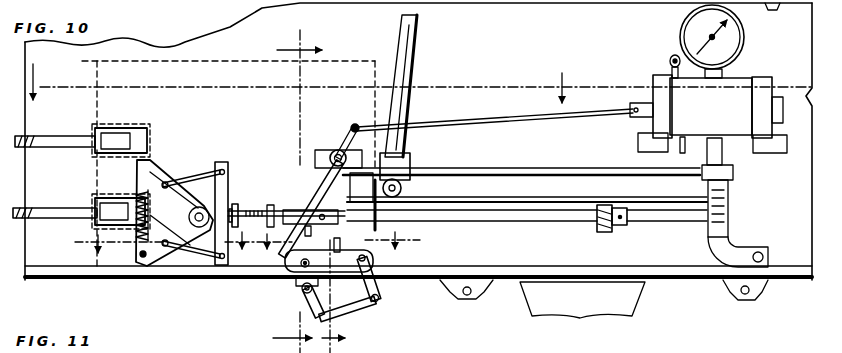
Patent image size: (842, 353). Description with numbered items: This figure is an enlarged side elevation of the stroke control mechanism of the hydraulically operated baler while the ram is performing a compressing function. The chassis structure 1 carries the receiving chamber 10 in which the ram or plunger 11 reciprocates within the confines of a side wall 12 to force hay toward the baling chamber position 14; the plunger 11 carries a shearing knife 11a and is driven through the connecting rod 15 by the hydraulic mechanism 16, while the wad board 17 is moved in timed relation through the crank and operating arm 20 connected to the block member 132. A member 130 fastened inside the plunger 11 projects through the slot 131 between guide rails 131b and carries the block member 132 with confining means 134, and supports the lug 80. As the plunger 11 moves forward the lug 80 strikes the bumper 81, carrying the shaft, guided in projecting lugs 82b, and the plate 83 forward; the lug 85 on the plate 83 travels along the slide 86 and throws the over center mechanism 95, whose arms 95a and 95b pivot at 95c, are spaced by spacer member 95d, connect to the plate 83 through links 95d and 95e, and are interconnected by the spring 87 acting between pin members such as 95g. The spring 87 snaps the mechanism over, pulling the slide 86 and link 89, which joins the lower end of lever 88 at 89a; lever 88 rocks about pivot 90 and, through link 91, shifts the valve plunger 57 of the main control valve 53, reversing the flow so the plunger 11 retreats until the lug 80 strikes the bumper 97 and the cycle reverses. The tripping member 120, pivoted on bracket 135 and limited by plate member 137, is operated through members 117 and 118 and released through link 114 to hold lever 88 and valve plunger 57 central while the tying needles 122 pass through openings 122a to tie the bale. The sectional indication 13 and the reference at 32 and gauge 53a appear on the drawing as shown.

The chassis structure 1 is at (55, 283).
The receiving chamber 10 is at (58, 133).
The ram or plunger 11 is at (184, 67).
The shearing knife 11a is at (95, 62).
The side wall 12 is at (58, 250).
The sectional view line 13 is at (422, 75).
The baling chamber position 14 is at (169, 242).
The connecting rod 15 is at (299, 97).
The hydraulic mechanism 16 is at (309, 296).
The wad board 17 is at (322, 236).
The crank and operating arm 20 is at (423, 37).
The base 32 is at (582, 281).
The main control valve 53 is at (729, 94).
The pressure gauge 53a is at (735, 45).
The valve plunger 57 is at (648, 102).
The lug 80 is at (424, 203).
The bumper 81 is at (338, 236).
The projecting lugs 82b is at (310, 183).
The plate 83 is at (223, 165).
The lug 85 is at (236, 205).
The slide 86 is at (255, 207).
The spring 87 is at (137, 242).
The lever 88 is at (335, 152).
The link 89 is at (298, 218).
The link connection 89a is at (284, 264).
The pivot 90 is at (356, 126).
The link 91 is at (463, 121).
The over center mechanism 95 is at (182, 173).
The arm 95a is at (170, 182).
The arm 95b is at (162, 250).
The pivot 95c is at (215, 258).
The spacer member 95d is at (205, 178).
The link 95e is at (196, 248).
The pin member 95g is at (157, 256).
The bumper 97 is at (607, 233).
The link 114 is at (392, 280).
The member 117 is at (300, 292).
The member 118 is at (368, 302).
The valve plunger arresting device 120 is at (278, 322).
The tying needles 122 is at (49, 207).
The openings 122a is at (133, 117).
The member 130 is at (406, 150).
The slot 131 is at (519, 183).
The rails 131b is at (576, 196).
The block member 132 is at (410, 155).
The confining means 134 is at (416, 176).
The bracket 135 is at (390, 264).
The plate member 137 is at (343, 320).